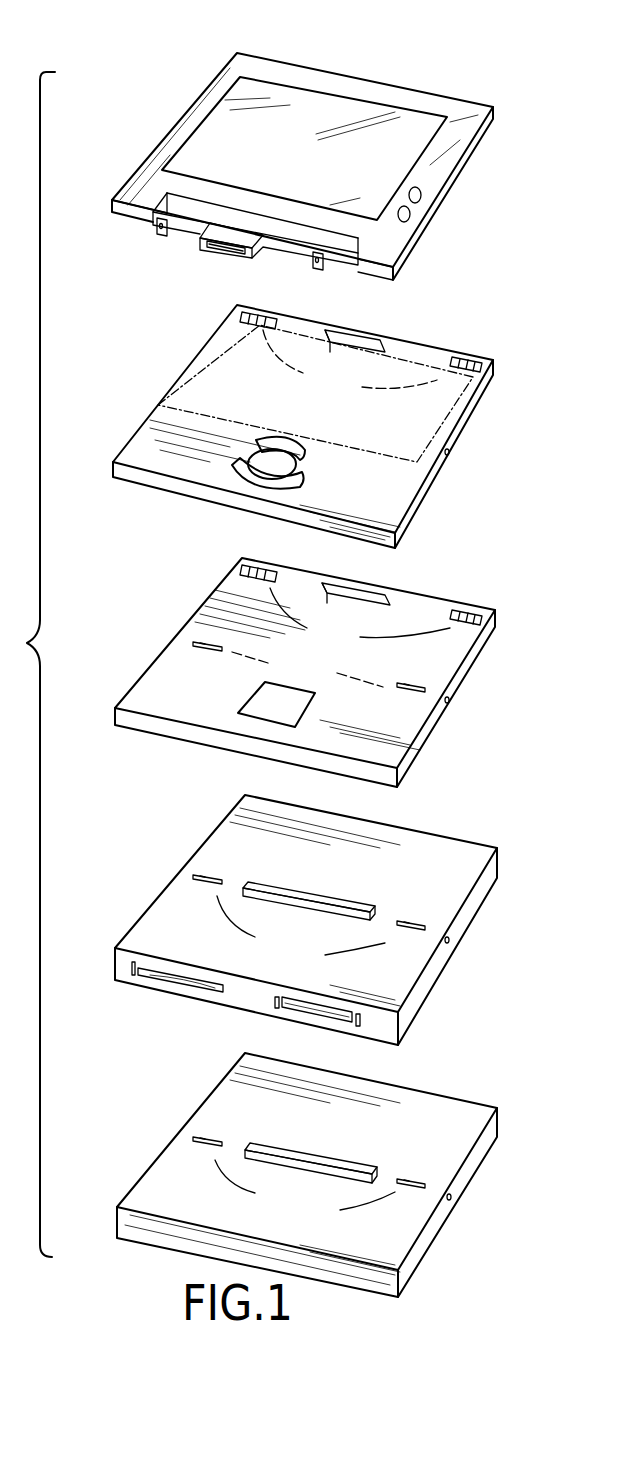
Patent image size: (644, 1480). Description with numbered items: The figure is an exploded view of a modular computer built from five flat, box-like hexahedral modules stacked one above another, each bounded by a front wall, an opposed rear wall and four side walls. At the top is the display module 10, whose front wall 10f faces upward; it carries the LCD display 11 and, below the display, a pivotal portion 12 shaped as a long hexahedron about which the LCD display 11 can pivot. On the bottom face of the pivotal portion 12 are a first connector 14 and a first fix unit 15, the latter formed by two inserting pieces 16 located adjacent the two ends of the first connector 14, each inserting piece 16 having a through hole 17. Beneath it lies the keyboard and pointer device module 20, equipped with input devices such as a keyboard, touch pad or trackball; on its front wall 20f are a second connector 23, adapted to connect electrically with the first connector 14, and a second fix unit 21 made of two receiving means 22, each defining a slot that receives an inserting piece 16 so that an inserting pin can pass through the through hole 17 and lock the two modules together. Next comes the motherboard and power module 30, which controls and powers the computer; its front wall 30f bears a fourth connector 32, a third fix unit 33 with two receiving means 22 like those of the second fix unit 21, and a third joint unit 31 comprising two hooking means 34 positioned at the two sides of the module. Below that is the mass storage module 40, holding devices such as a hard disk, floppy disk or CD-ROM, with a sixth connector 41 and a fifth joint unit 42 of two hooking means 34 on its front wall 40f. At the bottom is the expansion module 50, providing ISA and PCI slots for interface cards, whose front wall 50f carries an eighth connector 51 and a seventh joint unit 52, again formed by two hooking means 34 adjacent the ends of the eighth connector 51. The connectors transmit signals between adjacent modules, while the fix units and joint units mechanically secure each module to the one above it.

The display module 10 is at (168, 112).
The front wall of display module 10f is at (478, 100).
The LCD display 11 is at (390, 90).
The pivotal portion 12 is at (185, 230).
The first connector 14 is at (257, 250).
The first fix unit 15 is at (182, 200).
The inserting piece 16 is at (157, 230).
The through hole 17 is at (168, 237).
The keyboard and pointer device module 20 is at (147, 390).
The front wall of keyboard and pointer device module 20f is at (413, 480).
The second fix unit 21 is at (334, 409).
The receiving means 22 is at (253, 310).
The second connector 23 is at (393, 338).
The motherboard and power module 30 is at (165, 603).
The front wall of motherboard and power module 30f is at (453, 657).
The third joint unit 31 is at (307, 689).
The fourth connector 32 is at (387, 592).
The third fix unit 33 is at (360, 618).
The hooking means 34 is at (200, 647).
The mass storage module 40 is at (175, 848).
The front wall of mass storage module 40f is at (475, 872).
The sixth connector 41 is at (320, 890).
The fifth joint unit 42 is at (301, 929).
The expansion module 50 is at (167, 1100).
The front wall of expansion module 50f is at (475, 1108).
The eighth connector 51 is at (330, 1158).
The seventh joint unit 52 is at (305, 1188).